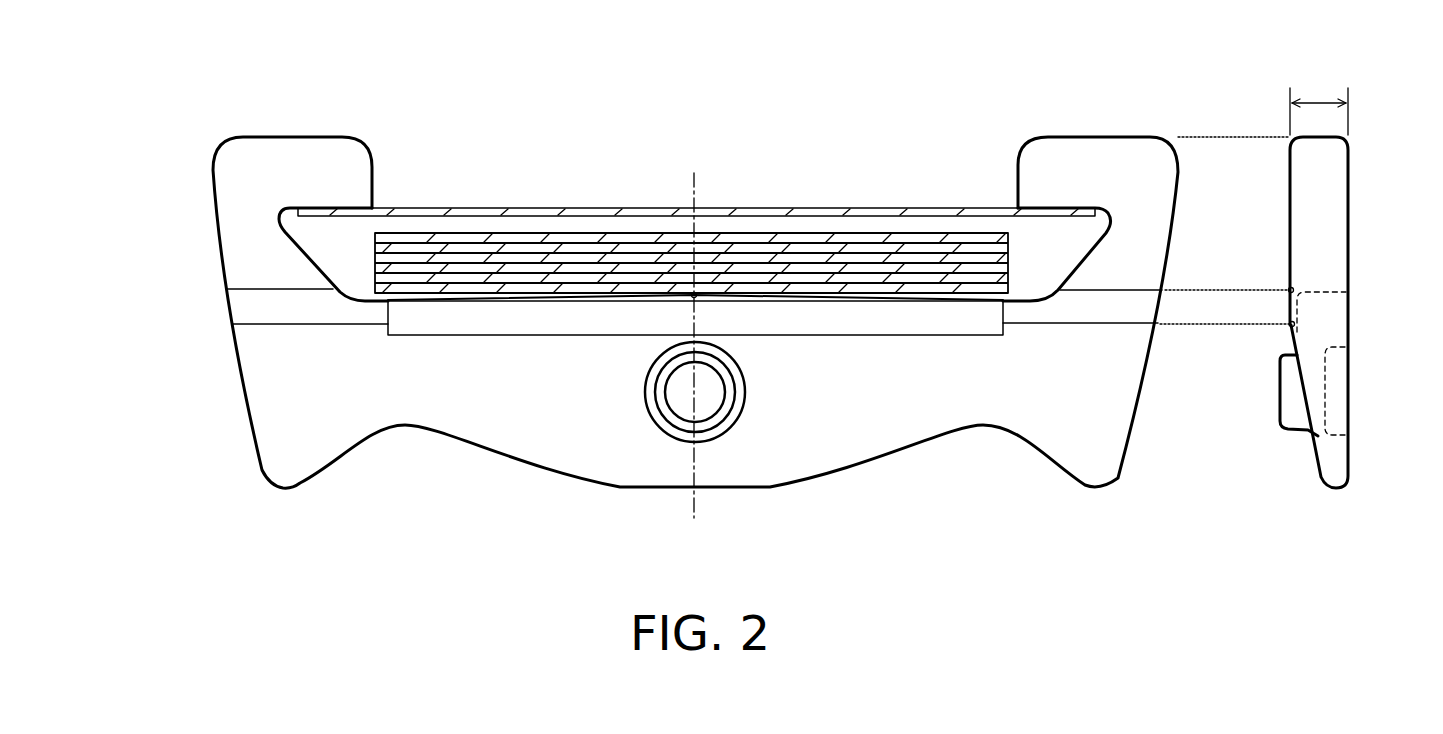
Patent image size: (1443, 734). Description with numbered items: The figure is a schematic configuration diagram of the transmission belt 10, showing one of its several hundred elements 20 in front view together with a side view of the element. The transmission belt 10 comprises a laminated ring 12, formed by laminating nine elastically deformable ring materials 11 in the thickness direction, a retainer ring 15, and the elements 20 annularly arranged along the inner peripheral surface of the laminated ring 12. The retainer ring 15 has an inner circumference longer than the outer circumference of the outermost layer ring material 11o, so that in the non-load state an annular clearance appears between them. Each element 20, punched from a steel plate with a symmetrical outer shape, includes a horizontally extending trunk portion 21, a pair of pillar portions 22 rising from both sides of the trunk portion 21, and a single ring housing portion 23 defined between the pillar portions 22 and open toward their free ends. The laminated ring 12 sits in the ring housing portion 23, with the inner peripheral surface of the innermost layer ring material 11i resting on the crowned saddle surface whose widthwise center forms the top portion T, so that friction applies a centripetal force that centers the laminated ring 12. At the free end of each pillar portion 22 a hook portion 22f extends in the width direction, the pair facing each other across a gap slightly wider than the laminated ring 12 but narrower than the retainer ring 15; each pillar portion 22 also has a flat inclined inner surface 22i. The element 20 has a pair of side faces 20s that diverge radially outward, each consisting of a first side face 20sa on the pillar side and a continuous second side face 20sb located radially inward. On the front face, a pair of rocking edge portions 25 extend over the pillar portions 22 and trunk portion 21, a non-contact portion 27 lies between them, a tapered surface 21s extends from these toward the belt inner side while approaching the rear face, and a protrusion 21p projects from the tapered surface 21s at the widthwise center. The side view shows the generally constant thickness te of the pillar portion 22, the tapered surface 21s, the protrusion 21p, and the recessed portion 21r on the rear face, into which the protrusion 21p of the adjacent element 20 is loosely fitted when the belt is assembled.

The transmission belt 10 is at (746, 176).
The ring material 11 is at (1008, 283).
The outermost layer ring material 11o is at (795, 237).
The innermost layer ring material 11i is at (612, 295).
The laminated ring 12 is at (913, 228).
The retainer ring 15 is at (540, 208).
The element 20 is at (490, 453).
The side face 20s is at (120, 218).
The first side face 20sa is at (215, 225).
The second side face 20sb is at (241, 383).
The trunk portion 21 is at (805, 426).
The tapered surface 21s is at (520, 403).
The protrusion 21p is at (672, 392).
The recessed portion 21r is at (1337, 383).
The pillar portion 22 is at (285, 160).
The inner surface 22i is at (298, 248).
The hook portion 22f is at (360, 168).
The ring housing portion 23 is at (362, 258).
The rocking edge portion 25 is at (330, 312).
The non-contact portion 27 is at (849, 308).
The top portion T is at (694, 295).
The thickness te is at (1319, 103).